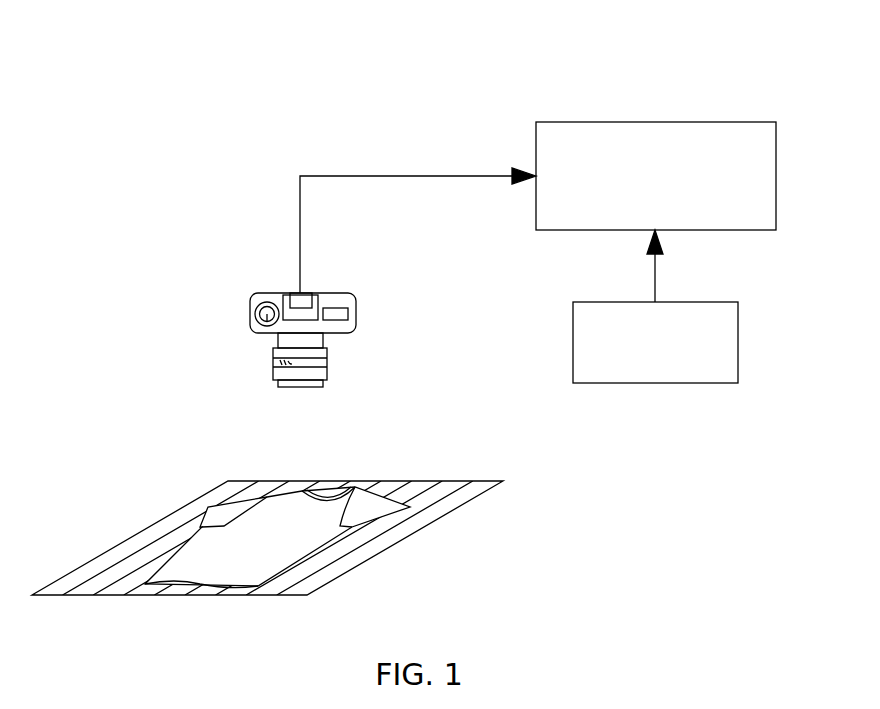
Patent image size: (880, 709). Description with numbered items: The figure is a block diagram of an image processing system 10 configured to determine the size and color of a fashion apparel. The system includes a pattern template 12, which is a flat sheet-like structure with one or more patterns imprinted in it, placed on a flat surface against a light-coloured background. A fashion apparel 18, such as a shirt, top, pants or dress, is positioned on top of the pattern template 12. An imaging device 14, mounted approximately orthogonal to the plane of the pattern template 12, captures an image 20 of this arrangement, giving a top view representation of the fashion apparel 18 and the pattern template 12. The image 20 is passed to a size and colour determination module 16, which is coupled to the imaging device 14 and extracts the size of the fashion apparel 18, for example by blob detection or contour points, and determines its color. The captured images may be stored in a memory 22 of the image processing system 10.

The image processing system 10 is at (625, 78).
The pattern template 12 is at (475, 497).
The imaging device 14 is at (250, 316).
The size and colour determination module 16 is at (685, 217).
The fashion apparel 18 is at (287, 498).
The image 20 is at (410, 164).
The memory 22 is at (641, 371).